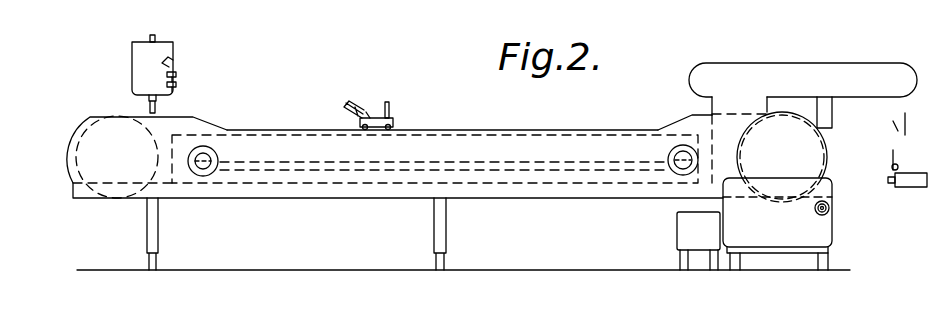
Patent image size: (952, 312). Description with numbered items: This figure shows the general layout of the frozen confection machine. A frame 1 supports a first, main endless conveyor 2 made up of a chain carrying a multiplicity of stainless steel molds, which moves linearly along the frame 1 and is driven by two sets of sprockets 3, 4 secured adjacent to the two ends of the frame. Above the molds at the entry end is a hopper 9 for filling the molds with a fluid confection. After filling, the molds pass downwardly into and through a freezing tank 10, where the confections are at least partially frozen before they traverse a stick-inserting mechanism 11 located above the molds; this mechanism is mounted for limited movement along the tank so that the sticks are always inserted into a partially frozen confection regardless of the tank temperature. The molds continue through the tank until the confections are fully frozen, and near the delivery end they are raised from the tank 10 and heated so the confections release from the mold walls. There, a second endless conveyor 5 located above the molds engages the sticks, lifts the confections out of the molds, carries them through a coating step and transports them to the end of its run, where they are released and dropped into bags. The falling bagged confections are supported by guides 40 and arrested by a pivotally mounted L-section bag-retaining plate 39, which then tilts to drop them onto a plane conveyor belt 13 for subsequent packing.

The frame 1 is at (198, 119).
The first endless conveyor 2 is at (487, 130).
The sprockets 3 is at (84, 124).
The sprockets 4 is at (832, 175).
The second endless conveyor 5 is at (784, 62).
The hopper 9 is at (173, 50).
The freezing tank 10 is at (591, 134).
The stick-inserting mechanism 11 is at (395, 113).
The plane conveyor belt 13 is at (912, 187).
The bag-retaining plate 39 is at (890, 162).
The guides 40 is at (893, 127).